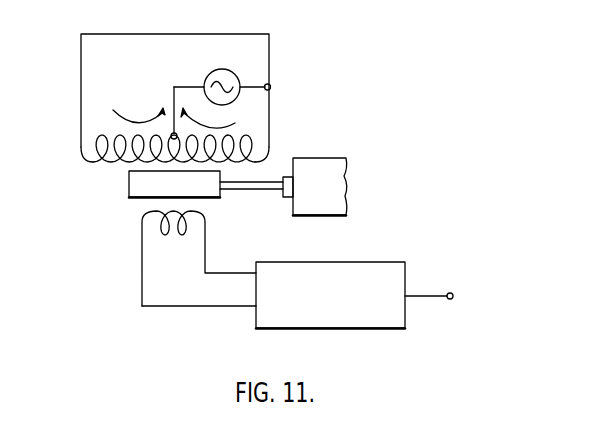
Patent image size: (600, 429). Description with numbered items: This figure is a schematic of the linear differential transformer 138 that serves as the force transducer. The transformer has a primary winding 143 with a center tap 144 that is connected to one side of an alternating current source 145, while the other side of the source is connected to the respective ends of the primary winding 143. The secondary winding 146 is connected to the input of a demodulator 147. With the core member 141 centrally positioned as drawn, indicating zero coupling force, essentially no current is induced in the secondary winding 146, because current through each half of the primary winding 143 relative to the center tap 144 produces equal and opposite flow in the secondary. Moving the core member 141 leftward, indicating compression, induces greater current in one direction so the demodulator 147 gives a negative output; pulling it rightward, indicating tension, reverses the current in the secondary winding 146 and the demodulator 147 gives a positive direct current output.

The linear differential transformer 138 is at (96, 224).
The core member 141 is at (147, 190).
The primary winding 143 is at (117, 161).
The center tap 144 is at (173, 133).
The alternating current source 145 is at (219, 69).
The secondary winding 146 is at (185, 263).
The demodulator 147 is at (378, 262).